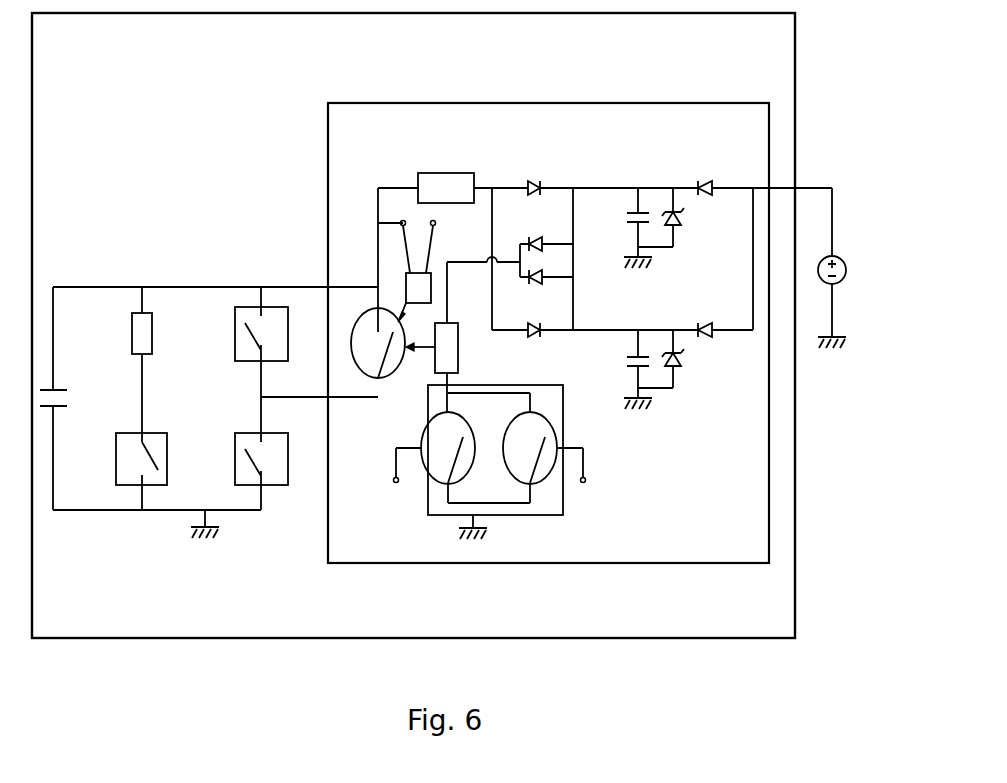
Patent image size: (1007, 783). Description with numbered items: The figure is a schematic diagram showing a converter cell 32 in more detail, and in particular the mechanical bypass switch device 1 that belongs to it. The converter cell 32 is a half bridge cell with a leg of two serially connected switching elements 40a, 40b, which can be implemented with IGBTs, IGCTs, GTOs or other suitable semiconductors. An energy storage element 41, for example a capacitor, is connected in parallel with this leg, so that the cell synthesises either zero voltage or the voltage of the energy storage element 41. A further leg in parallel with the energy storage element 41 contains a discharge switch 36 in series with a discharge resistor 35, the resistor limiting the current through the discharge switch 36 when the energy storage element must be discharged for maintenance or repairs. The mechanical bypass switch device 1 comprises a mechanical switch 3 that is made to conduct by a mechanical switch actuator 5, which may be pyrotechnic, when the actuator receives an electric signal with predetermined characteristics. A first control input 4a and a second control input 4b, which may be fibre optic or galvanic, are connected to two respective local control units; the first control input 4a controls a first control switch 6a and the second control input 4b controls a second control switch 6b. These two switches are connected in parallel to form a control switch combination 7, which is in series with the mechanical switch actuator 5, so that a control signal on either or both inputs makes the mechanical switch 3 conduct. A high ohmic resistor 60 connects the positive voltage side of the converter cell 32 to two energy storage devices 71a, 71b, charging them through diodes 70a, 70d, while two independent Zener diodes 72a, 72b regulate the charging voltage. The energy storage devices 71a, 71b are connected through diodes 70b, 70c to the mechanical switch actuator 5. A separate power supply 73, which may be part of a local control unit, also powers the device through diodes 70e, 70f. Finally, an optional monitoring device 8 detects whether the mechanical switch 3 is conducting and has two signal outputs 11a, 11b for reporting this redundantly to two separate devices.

The converter cell 32 is at (413, 325).
The mechanical bypass switch device 1 is at (548, 333).
The high ohmic resistor 60 is at (446, 188).
The signal output 11a is at (399, 223).
The signal output 11b is at (436, 222).
The monitoring device 8 is at (414, 297).
The mechanical switch 3 is at (362, 312).
The mechanical switch actuator 5 is at (432, 348).
The control switch combination 7 is at (510, 385).
The first control switch 6a is at (437, 415).
The second control switch 6b is at (548, 478).
The first control input 4a is at (396, 484).
The second control input 4b is at (583, 484).
The diode 70a is at (533, 181).
The diode 70b is at (552, 228).
The diode 70c is at (540, 283).
The diode 70d is at (540, 336).
The diode 70e is at (708, 183).
The diode 70f is at (708, 323).
The energy storage device 71a is at (634, 226).
The energy storage device 71b is at (634, 368).
The Zener diode 72a is at (682, 216).
The Zener diode 72b is at (682, 357).
The separate power supply 73 is at (846, 268).
The energy storage element 41 is at (64, 388).
The discharge resistor 35 is at (152, 342).
The discharge switch 36 is at (116, 464).
The first switching element 40a is at (288, 350).
The second switching element 40b is at (288, 443).